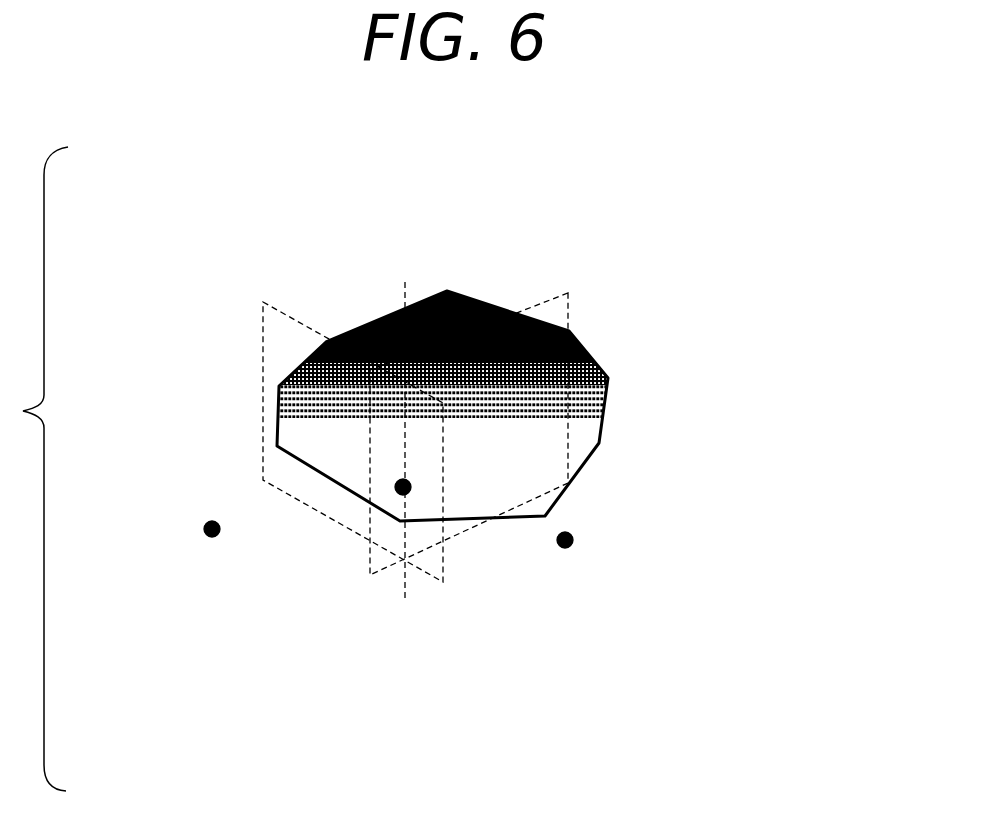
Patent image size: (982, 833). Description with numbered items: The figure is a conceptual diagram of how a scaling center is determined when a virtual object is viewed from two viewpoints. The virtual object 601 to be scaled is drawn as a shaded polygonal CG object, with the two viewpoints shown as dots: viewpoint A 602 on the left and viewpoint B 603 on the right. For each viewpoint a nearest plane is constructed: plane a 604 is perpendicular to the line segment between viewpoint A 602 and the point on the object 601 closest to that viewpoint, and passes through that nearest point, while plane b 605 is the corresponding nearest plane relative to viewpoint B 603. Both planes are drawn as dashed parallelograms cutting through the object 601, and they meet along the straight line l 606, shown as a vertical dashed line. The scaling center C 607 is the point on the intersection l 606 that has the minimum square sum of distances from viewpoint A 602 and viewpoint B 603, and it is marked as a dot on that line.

The virtual object 601 is at (583, 443).
The viewpoint A 602 is at (209, 538).
The viewpoint B 603 is at (573, 537).
The plane a 604 is at (262, 395).
The plane b 605 is at (568, 312).
The intersection l 606 is at (497, 408).
The scaling center C 607 is at (408, 493).